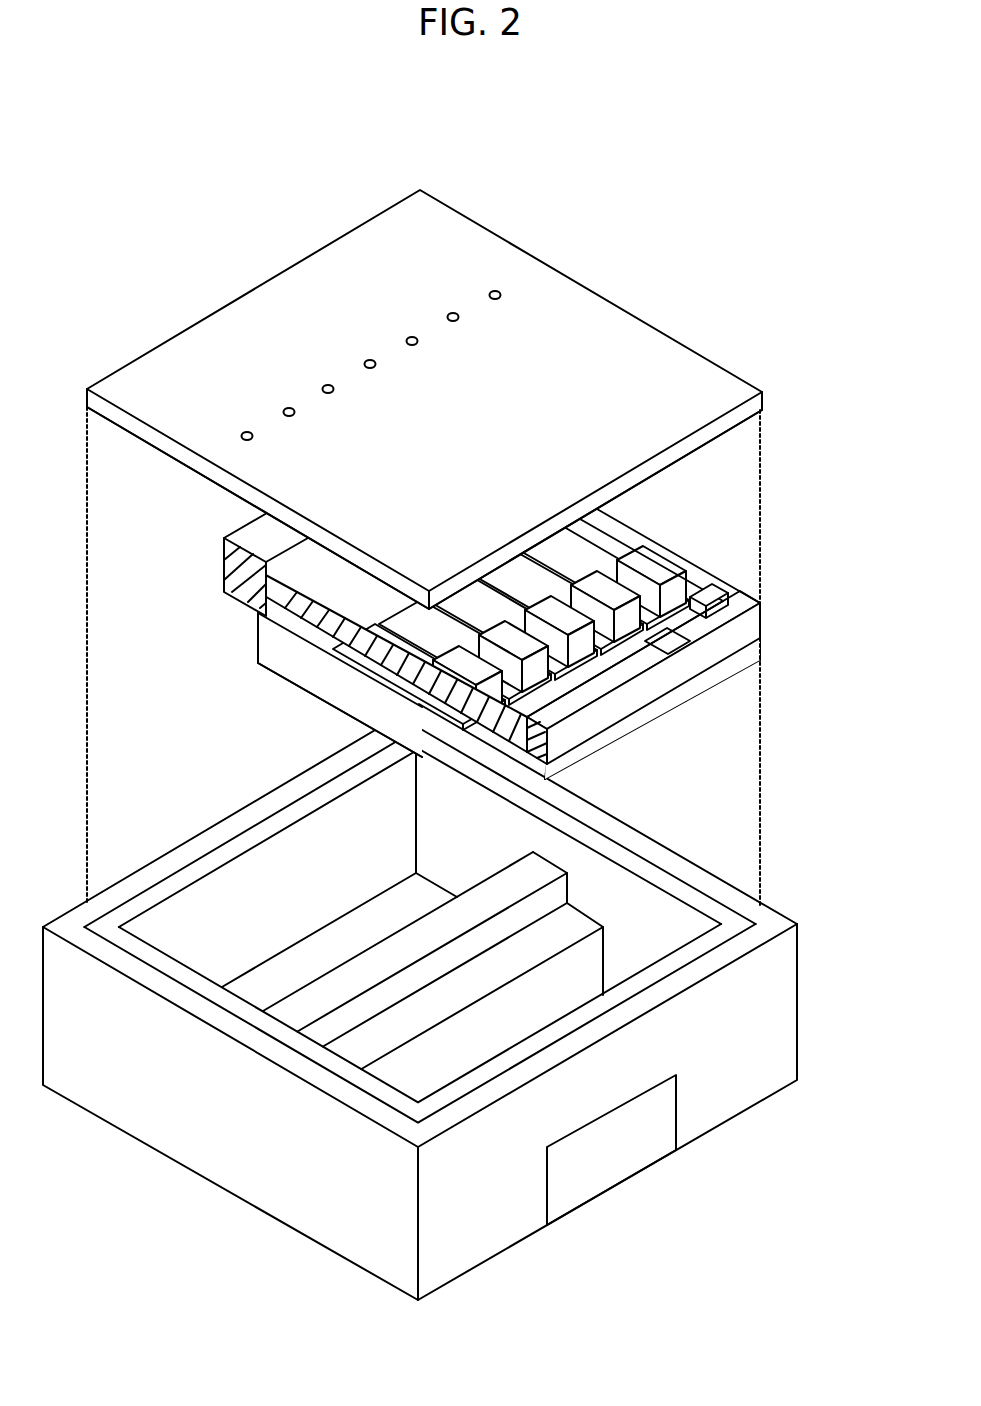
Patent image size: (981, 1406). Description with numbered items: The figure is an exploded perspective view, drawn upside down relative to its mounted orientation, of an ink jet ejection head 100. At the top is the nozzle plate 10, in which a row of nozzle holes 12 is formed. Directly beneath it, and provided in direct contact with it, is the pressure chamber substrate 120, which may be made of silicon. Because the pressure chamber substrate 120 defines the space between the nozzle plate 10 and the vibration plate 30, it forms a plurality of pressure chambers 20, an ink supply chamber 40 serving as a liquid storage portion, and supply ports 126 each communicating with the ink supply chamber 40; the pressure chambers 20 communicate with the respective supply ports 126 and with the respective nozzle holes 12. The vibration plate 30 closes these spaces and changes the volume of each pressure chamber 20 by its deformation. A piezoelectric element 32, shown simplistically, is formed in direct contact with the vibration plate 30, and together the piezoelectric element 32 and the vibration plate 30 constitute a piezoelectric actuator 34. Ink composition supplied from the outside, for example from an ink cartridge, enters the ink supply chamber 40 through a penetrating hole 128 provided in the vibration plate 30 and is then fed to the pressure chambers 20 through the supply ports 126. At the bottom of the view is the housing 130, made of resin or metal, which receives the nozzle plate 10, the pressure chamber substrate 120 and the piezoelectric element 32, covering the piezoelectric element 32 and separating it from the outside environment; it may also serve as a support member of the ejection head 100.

The ejection head 100 is at (704, 180).
The nozzle plate 10 is at (630, 358).
The nozzle holes 12 is at (496, 290).
The pressure chambers 20 is at (623, 573).
The vibration plate 30 is at (325, 648).
The piezoelectric element 32 is at (262, 632).
The piezoelectric actuator 34 is at (138, 673).
The ink supply chamber 40 is at (708, 592).
The pressure chamber substrate 120 is at (224, 534).
The supply ports 126 is at (622, 575).
The penetrating hole 128 is at (652, 636).
The housing 130 is at (776, 916).